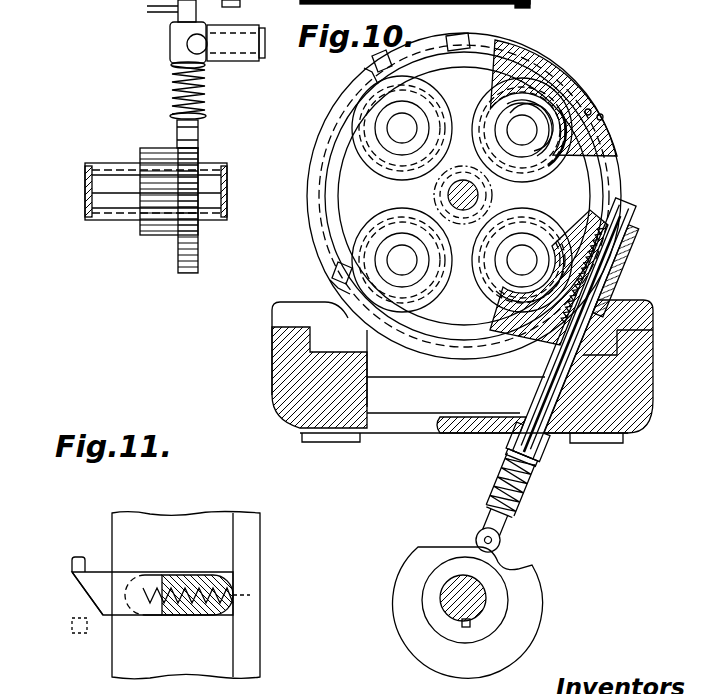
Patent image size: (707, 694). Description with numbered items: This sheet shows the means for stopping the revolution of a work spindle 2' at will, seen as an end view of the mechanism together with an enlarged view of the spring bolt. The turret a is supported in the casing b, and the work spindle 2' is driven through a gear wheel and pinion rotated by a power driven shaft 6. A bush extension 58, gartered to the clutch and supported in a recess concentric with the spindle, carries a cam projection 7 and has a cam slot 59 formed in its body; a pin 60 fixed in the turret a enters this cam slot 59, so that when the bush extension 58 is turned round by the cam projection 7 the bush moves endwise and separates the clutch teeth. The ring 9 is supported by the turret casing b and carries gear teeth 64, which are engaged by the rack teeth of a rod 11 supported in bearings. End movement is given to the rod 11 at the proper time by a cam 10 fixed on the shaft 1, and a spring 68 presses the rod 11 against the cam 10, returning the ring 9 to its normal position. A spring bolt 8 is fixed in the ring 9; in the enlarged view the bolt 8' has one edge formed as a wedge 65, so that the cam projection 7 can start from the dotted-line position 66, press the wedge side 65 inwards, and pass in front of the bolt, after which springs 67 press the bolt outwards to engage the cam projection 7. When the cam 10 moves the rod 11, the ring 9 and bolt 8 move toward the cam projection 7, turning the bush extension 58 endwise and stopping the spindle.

In FIG. 10, the shaft 1 is at (446, 611).
In FIG. 10, the work spindle 2' is at (462, 129).
In FIG. 10, the power driven shaft 6 is at (463, 210).
In FIG. 10, the cam projection 7 is at (364, 70).
In FIG. 11, the cam projection 7 is at (70, 563).
In FIG. 10, the spring bolt 8 is at (459, 167).
In FIG. 11, the spring bolt 8' is at (152, 593).
In FIG. 10, the ring 9 is at (548, 86).
In FIG. 11, the ring 9 is at (175, 520).
In FIG. 10, the cam 10 is at (535, 598).
In FIG. 10, the rod 11 is at (598, 444).
In FIG. 10, the bush extension 58 is at (523, 60).
In FIG. 10, the cam slot 59 is at (556, 94).
In FIG. 10, the pin 60 is at (578, 103).
In FIG. 10, the gear teeth 64 is at (612, 262).
In FIG. 11, the wedge 65 is at (82, 590).
In FIG. 10, the dotted-line position 66 is at (448, 40).
In FIG. 11, the dotted-line position 66 is at (72, 630).
In FIG. 11, the springs 67 is at (215, 582).
In FIG. 10, the spring 68 is at (524, 500).
In FIG. 10, the turret a is at (464, 196).
In FIG. 10, the casing b is at (308, 190).